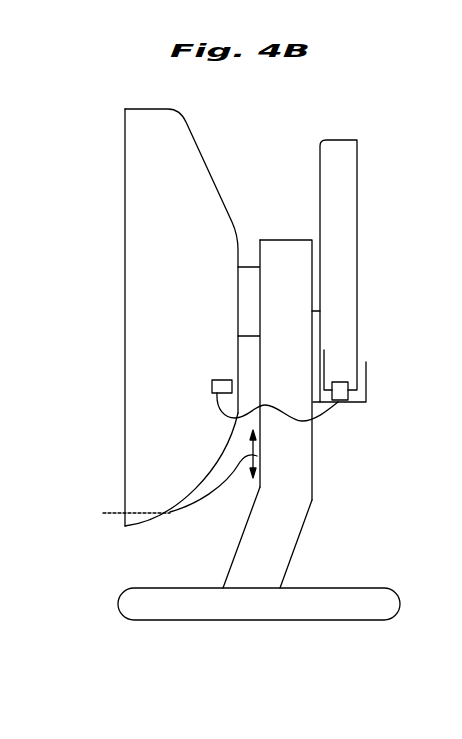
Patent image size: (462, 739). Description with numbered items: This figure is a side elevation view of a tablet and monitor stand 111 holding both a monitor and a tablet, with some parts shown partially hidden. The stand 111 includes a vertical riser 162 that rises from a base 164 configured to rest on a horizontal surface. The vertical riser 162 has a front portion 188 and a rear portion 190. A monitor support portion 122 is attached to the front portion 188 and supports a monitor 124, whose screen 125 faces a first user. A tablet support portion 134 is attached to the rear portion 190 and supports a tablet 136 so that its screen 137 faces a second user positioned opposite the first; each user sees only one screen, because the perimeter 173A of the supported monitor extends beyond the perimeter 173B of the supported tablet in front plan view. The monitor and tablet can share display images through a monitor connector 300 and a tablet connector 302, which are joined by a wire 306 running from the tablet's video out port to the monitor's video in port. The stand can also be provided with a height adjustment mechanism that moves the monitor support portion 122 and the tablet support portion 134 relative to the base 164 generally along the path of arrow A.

The tablet and monitor stand 111 is at (323, 96).
The monitor support portion 122 is at (245, 208).
The monitor 124 is at (125, 123).
The screen 125 is at (125, 182).
The perimeter 173A is at (157, 178).
The tablet 136 is at (360, 168).
The screen 137 is at (358, 238).
The perimeter 173B is at (350, 282).
The tablet support portion 134 is at (363, 418).
The tablet connector 302 is at (345, 383).
The monitor connector 300 is at (212, 386).
The wire 306 is at (297, 420).
The front portion 188 is at (258, 487).
The arrow A is at (129, 514).
The rear portion 190 is at (312, 495).
The vertical riser 162 is at (229, 551).
The base 164 is at (340, 602).